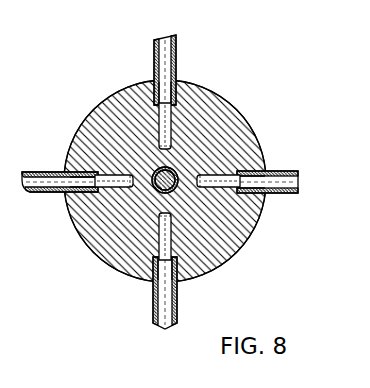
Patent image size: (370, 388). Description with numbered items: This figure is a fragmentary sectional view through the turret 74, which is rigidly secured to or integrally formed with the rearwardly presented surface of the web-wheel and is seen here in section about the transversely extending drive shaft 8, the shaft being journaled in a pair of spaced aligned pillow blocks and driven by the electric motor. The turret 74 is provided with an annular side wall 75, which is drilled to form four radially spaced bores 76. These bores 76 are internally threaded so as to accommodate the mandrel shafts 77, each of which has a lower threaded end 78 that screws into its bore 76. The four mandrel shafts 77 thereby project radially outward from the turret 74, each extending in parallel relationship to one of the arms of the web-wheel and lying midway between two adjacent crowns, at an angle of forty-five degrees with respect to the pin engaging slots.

The drive shaft 8 is at (100, 256).
The turret 74 is at (233, 106).
The annular side wall 75 is at (209, 90).
The bores 76 is at (158, 115).
The mandrel shafts 77 is at (47, 171).
The lower threaded ends 78 is at (84, 127).